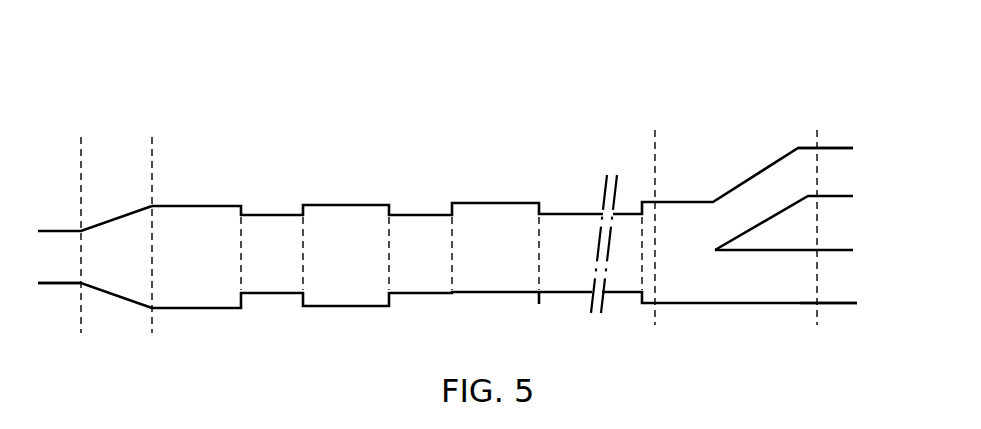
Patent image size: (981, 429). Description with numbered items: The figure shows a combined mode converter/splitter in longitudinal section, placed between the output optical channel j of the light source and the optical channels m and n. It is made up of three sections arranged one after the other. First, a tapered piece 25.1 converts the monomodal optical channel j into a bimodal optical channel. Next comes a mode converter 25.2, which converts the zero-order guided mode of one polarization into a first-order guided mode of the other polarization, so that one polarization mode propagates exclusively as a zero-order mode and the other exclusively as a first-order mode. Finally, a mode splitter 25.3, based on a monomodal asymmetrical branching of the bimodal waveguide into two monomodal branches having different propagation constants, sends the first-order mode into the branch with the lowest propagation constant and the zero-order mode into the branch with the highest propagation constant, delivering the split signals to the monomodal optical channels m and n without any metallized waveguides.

The tapered piece 25.1 is at (152, 112).
The mode converter 25.2 is at (653, 108).
The mode splitter 25.3 is at (817, 107).
The optical channel j is at (57, 283).
The optical channel m is at (838, 148).
The optical channel n is at (840, 303).